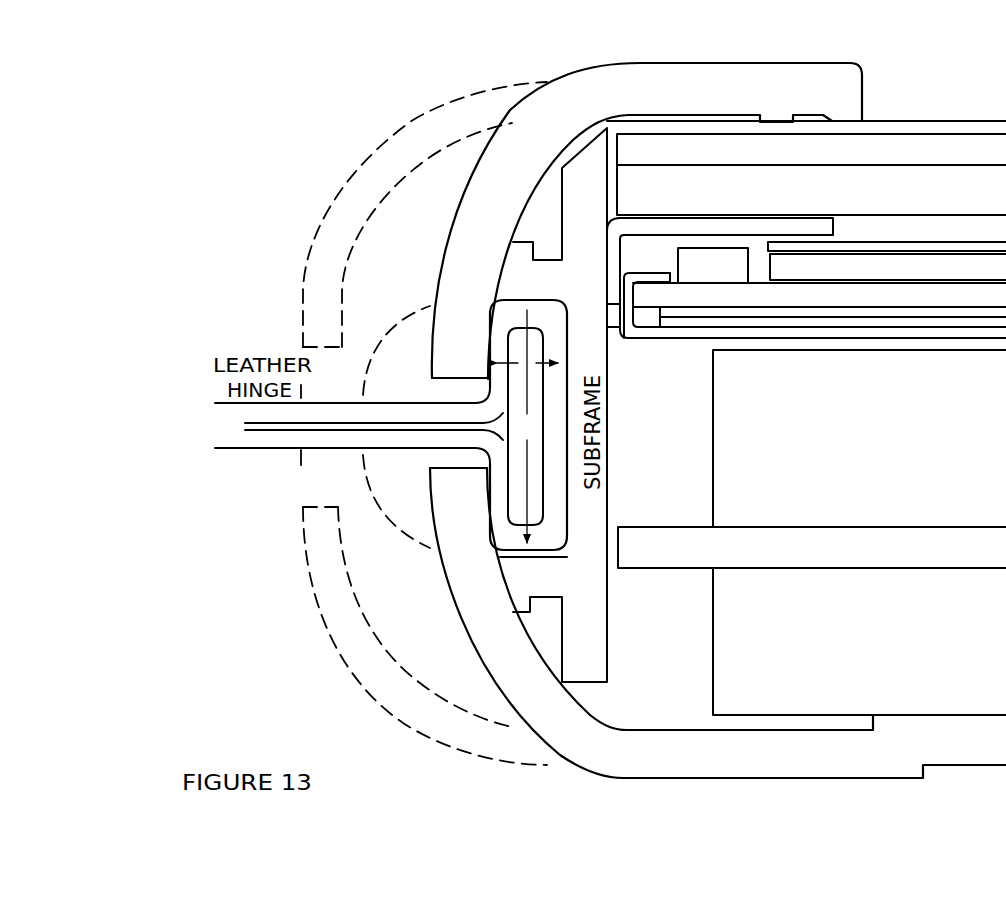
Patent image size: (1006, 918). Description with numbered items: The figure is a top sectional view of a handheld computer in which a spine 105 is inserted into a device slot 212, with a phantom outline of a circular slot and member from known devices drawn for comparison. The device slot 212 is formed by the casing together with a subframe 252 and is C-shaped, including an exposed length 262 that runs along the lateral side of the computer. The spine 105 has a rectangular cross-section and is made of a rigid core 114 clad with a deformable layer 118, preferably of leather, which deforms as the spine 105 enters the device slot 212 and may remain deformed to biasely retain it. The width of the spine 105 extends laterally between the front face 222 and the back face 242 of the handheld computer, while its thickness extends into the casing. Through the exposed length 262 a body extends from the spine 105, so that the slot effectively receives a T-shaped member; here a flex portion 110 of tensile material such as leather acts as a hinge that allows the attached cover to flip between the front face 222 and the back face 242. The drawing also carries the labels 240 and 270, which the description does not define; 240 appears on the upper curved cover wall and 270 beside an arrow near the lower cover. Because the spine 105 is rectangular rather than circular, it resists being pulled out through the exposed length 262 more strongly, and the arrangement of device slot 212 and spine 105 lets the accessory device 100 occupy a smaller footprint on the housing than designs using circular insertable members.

The accessory device 100 is at (243, 324).
The spine 105 is at (543, 467).
The flex portion 110 is at (327, 448).
The core 114 is at (538, 438).
The deformable layer 118 is at (547, 533).
The device slot 212 is at (458, 383).
The front face 222 is at (450, 613).
The upper cover 240 is at (480, 231).
The back face 242 is at (704, 63).
The subframe 252 is at (587, 353).
The exposed length 262 is at (448, 452).
The cover closing direction 270 is at (553, 778).